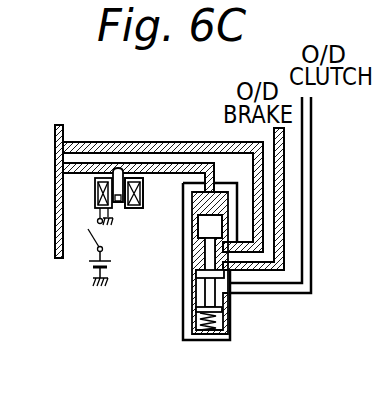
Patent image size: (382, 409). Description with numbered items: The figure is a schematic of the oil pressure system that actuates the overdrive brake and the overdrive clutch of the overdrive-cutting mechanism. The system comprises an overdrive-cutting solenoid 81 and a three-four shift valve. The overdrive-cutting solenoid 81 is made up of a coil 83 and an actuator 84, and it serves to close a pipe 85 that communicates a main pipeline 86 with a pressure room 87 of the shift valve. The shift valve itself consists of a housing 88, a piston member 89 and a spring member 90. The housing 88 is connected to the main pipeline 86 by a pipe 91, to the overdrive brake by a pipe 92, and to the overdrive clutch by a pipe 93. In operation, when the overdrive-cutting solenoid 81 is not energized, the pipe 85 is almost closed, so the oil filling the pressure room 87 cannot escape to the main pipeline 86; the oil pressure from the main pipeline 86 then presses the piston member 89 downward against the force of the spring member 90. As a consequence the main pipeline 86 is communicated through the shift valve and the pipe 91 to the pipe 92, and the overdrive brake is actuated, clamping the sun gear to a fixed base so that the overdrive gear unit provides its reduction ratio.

The overdrive-cutting solenoid 81 is at (132, 258).
The coil 83 is at (143, 190).
The actuator 84 is at (118, 208).
The pipe 85 is at (163, 167).
The main pipeline 86 is at (55, 233).
The pressure room 87 is at (207, 200).
The housing 88 is at (230, 308).
The piston member 89 is at (207, 233).
The spring member 90 is at (181, 326).
The pipe 91 is at (96, 142).
The pipe 92 is at (284, 182).
The pipe 93 is at (311, 279).